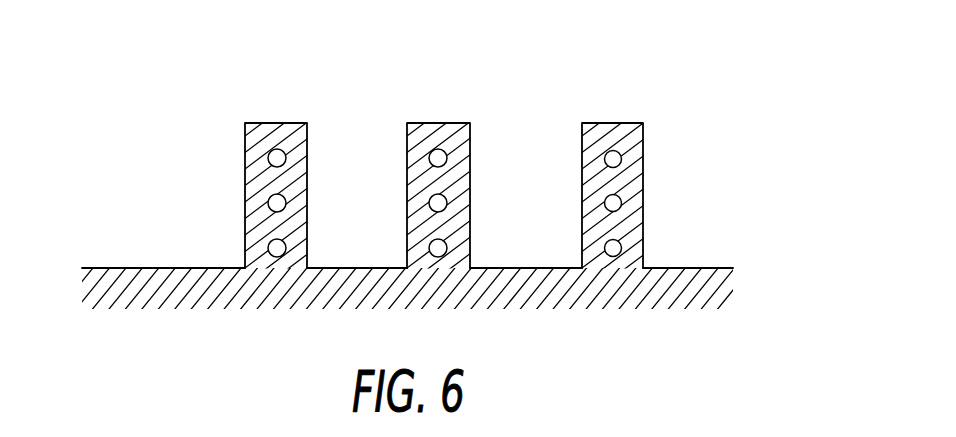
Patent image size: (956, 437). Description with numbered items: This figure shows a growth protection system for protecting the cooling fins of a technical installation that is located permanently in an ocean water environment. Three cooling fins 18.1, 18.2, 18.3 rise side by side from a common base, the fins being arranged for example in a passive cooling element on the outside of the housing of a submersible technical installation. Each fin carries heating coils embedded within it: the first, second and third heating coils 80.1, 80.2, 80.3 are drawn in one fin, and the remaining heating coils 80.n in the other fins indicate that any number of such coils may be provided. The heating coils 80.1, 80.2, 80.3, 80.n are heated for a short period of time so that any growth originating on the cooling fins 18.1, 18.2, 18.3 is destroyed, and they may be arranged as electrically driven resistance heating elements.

The cooling fin 18.1 is at (276, 123).
The cooling fin 18.2 is at (441, 123).
The cooling fin 18.3 is at (613, 123).
The heating coil 80.n is at (277, 158).
The heating coil 80.1 is at (613, 159).
The heating coil 80.2 is at (613, 203).
The heating coil 80.3 is at (613, 248).